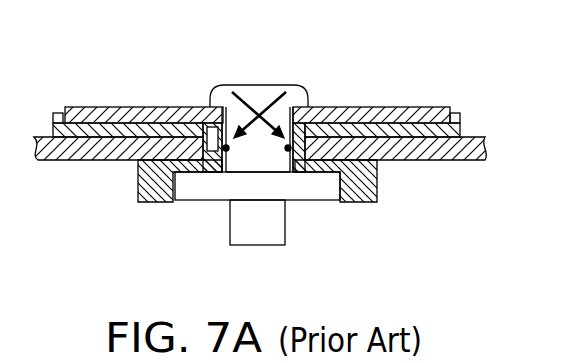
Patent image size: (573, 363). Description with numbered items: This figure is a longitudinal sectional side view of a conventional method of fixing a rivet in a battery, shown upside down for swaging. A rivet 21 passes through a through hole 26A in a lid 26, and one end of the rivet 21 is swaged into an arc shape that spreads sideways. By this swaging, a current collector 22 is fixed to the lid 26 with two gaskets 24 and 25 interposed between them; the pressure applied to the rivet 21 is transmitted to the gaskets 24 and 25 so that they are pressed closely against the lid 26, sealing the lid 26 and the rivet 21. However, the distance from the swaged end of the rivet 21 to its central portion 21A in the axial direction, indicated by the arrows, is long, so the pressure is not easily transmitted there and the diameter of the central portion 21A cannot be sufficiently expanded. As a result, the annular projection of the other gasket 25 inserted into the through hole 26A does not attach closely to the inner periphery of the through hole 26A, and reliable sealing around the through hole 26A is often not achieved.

The rivet 21 is at (257, 85).
The central portion of the rivet 21A is at (226, 150).
The current collector 22 is at (390, 107).
The gasket 24 is at (115, 127).
The other gasket 25 is at (148, 188).
The lid 26 is at (429, 161).
The through hole 26A is at (212, 148).